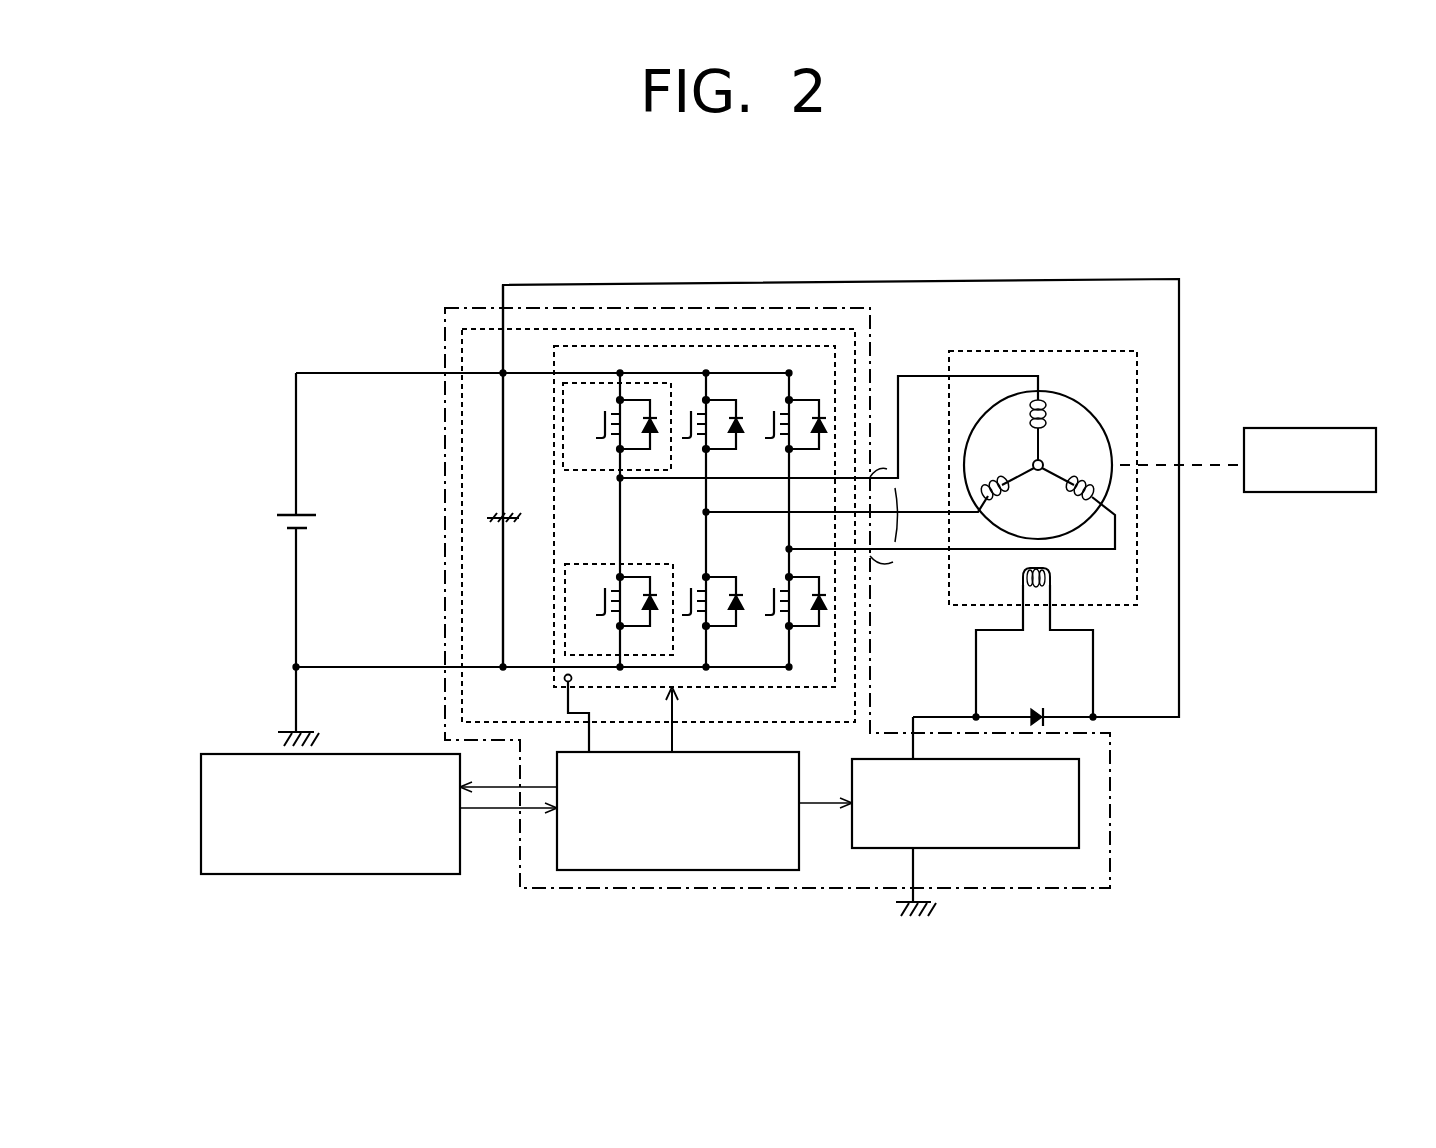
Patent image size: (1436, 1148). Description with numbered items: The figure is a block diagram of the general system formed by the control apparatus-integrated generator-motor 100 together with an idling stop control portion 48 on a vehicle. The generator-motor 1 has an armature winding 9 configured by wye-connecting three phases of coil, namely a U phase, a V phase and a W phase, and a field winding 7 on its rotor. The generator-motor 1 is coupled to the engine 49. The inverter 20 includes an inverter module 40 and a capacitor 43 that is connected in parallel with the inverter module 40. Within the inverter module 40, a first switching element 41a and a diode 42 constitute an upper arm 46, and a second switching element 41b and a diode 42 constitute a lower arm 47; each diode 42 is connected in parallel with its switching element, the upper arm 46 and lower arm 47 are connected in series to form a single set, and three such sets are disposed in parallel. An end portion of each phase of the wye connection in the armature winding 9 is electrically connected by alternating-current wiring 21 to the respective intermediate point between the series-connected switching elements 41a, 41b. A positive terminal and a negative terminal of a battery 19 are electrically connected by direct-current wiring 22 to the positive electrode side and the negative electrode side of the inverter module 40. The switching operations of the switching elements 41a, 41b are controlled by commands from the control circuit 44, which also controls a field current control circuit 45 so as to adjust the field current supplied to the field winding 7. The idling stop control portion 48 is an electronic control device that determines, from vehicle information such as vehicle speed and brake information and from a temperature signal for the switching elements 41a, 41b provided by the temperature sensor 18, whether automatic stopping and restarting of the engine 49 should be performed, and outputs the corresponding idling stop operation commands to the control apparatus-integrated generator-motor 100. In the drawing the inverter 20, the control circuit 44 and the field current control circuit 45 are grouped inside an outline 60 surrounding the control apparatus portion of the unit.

The control apparatus-integrated generator-motor 100 is at (1140, 218).
The power converter unit 60 is at (671, 303).
The inverter module 40 is at (803, 328).
The inverter 20 is at (871, 311).
The direct-current wiring 22 is at (381, 377).
The battery 19 is at (317, 523).
The capacitor 43 is at (513, 530).
The upper arm 46 is at (562, 418).
The lower arm 47 is at (564, 634).
The first switching element 41a is at (603, 438).
The second switching element 41b is at (597, 587).
The diode 42 is at (650, 440).
The alternating-current wiring 21 is at (895, 570).
The generator-motor 1 is at (1050, 350).
The armature winding 9 is at (1085, 398).
The field winding 7 is at (1052, 578).
The engine 49 is at (1313, 425).
The temperature sensor 18 is at (562, 678).
The control circuit 44 is at (710, 872).
The field current control circuit 45 is at (953, 852).
The idling stop control portion 48 is at (415, 877).